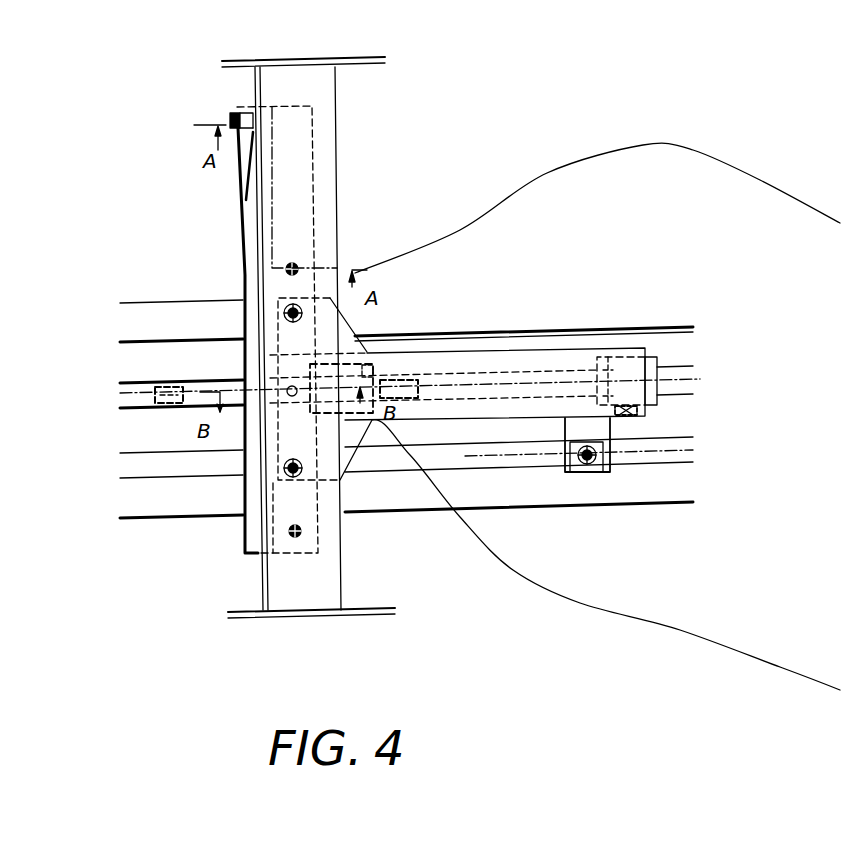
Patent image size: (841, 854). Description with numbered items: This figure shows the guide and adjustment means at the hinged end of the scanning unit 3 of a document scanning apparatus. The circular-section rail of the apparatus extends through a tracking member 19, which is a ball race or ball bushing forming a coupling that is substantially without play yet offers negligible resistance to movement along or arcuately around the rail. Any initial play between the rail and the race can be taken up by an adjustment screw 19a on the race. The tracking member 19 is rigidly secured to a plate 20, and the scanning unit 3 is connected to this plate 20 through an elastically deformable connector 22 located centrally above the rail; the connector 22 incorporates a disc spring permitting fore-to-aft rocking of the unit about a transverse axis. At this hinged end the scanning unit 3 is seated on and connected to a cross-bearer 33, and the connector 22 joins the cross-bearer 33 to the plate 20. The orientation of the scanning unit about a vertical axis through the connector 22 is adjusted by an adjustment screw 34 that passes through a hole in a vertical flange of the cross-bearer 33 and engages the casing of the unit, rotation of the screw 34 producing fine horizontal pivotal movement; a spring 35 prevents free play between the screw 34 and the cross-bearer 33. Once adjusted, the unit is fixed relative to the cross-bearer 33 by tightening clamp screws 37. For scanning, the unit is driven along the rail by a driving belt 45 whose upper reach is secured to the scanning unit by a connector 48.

The scanning unit 3 is at (287, 603).
The tracking member 19 is at (657, 355).
The adjustment screw 19a is at (624, 414).
The plate 20 is at (583, 350).
The elastically deformable connector 22 is at (291, 393).
The cross-bearer 33 is at (243, 268).
The adjustment screw 34 is at (228, 118).
The spring 35 is at (238, 182).
The clamp screws 37 is at (293, 268).
The driving belt 45 is at (694, 446).
The connector 48 is at (607, 472).